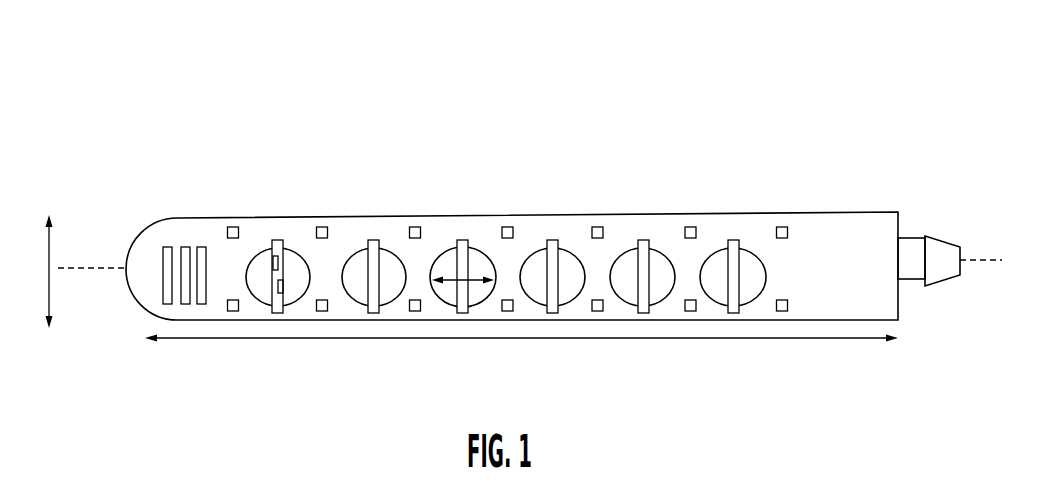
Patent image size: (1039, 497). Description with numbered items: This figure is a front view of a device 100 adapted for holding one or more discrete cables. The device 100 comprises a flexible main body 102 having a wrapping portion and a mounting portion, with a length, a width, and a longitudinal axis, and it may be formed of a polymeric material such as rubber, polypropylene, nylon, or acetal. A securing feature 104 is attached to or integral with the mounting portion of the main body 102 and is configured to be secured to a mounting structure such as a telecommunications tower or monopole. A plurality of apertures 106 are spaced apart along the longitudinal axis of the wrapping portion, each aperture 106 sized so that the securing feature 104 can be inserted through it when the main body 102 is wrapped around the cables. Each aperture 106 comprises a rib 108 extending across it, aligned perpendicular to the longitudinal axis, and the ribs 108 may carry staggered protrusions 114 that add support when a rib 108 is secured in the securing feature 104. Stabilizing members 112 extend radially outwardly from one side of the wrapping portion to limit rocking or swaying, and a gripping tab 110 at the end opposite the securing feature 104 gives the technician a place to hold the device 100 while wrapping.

The device 100 is at (152, 115).
The main body 102 is at (851, 225).
The securing feature 104 is at (940, 272).
The apertures 106 is at (533, 262).
The rib 108 is at (377, 255).
The gripping tab 110 is at (165, 258).
The stabilizing members 112 is at (236, 227).
The protrusions 114 is at (288, 282).